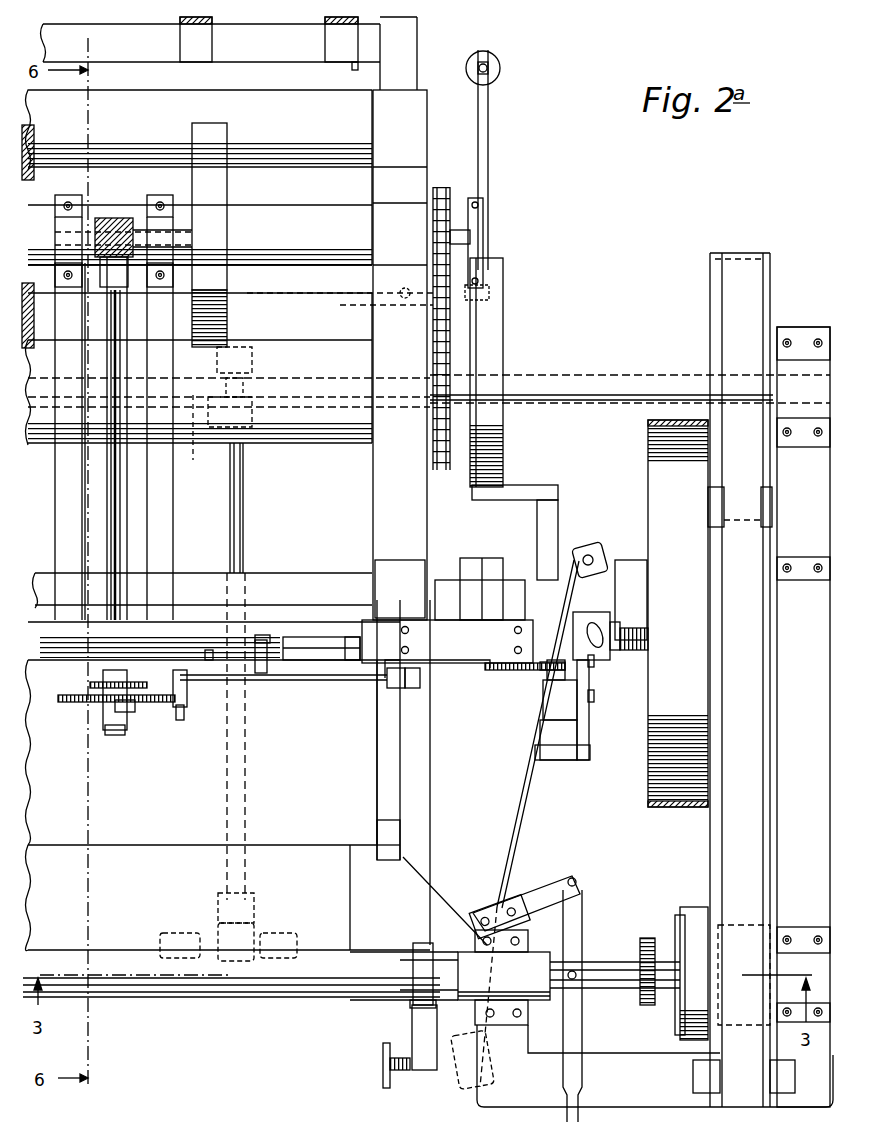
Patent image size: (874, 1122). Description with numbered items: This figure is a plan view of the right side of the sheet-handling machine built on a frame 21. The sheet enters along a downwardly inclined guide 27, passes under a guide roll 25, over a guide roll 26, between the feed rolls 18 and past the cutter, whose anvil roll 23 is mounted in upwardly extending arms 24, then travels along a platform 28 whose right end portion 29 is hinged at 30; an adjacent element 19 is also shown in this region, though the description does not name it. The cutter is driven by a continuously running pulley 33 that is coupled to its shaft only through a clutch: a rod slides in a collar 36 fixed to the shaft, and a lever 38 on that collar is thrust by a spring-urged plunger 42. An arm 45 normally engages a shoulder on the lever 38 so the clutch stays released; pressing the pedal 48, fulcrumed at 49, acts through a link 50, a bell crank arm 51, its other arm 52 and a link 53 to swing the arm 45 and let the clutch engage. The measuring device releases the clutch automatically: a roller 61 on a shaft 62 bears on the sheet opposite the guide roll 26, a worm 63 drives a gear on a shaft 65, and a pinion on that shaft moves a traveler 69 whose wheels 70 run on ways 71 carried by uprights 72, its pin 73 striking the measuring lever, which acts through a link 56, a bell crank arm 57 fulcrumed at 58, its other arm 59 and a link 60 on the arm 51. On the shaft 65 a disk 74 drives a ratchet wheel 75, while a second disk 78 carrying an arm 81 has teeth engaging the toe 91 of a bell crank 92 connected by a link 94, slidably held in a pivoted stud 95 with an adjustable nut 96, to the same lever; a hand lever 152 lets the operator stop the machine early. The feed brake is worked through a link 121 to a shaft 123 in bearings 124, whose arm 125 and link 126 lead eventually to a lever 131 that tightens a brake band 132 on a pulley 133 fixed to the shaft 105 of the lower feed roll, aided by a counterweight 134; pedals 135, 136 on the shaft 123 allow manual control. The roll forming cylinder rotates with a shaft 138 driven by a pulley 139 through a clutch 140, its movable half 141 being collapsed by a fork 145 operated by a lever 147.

The feed rolls 18 is at (348, 432).
The plate 19 is at (322, 582).
The frame 21 is at (420, 512).
The anvil roll 23 is at (283, 585).
The upwardly extending arms 24 is at (400, 589).
The guide roll 25 is at (199, 130).
The guide roll 26 is at (200, 216).
The downwardly inclined guide 27 is at (330, 38).
The platform 28 is at (202, 752).
The right end portion of the platform 29 is at (228, 898).
The hinge 30 is at (388, 866).
The pulley 33 is at (678, 613).
The collar 36 is at (625, 560).
The lever 38 is at (600, 660).
The plunger 42 is at (614, 650).
The arm 45 is at (588, 622).
The pedal 48 is at (523, 836).
The fulcrum 49 is at (575, 545).
The link 50 is at (560, 761).
The arm of bell crank 51 is at (590, 730).
The arm of bell crank 52 is at (592, 700).
The link 53 is at (592, 667).
The link 56 is at (447, 641).
The arm of bell crank 57 is at (480, 670).
The fulcrum 58 is at (540, 668).
The arm of bell crank 59 is at (548, 673).
The link 60 is at (545, 735).
The roller 61 is at (213, 205).
The shaft 62 is at (188, 236).
The worm 63 is at (114, 218).
The shaft 65 is at (122, 516).
The traveler 69 is at (210, 660).
The wheels 70 is at (257, 660).
The ways 71 is at (322, 652).
The uprights 72 is at (350, 660).
The pin 73 is at (263, 675).
The disk 74 is at (70, 697).
The ratchet wheel 75 is at (90, 684).
The second disk 78 is at (66, 703).
The arm 81 is at (135, 708).
The toe 91 is at (179, 721).
The bell crank 92 is at (190, 702).
The link 94 is at (312, 683).
The pivoted stud 95 is at (394, 690).
The adjustable nut 96 is at (415, 690).
The shaft 105 is at (607, 388).
The link 121 is at (196, 441).
The shaft 123 is at (244, 500).
The bearings 124 is at (253, 352).
The arm 125 is at (232, 305).
The link 126 is at (349, 297).
The lever 131 is at (490, 115).
The brake band 132 is at (487, 330).
The pulley 133 is at (505, 337).
The counterweight 134 is at (500, 70).
The pedal 135 is at (290, 933).
The pedal 136 is at (170, 933).
The shaft 138 is at (378, 962).
The pulley 139 is at (722, 934).
The clutch 140 is at (648, 940).
The other half of roll forming cylinder 141 is at (153, 985).
The fork 145 is at (412, 1011).
The lever 147 is at (383, 1072).
The hand lever 152 is at (110, 736).